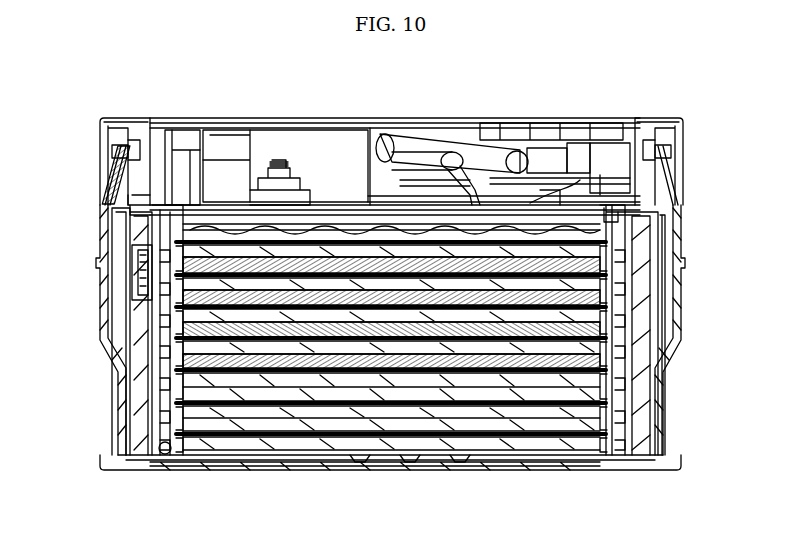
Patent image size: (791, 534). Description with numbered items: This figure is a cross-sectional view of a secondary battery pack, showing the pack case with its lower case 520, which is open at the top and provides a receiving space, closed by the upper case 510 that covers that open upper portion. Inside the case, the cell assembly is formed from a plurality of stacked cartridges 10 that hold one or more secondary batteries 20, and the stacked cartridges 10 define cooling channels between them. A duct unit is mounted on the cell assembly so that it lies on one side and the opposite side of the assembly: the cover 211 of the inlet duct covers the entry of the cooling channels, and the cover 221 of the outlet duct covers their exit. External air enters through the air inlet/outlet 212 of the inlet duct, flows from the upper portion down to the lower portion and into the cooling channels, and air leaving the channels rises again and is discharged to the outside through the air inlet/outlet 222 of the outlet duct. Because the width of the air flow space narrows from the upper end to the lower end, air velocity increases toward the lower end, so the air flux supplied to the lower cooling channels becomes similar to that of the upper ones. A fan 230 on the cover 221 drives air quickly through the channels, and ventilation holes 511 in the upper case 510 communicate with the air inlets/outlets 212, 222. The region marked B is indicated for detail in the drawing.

The cartridge 10 is at (165, 397).
The secondary battery 20 is at (283, 368).
The cover 211 is at (655, 298).
The air inlet/outlet 212 is at (678, 197).
The cover 221 is at (152, 373).
The air inlet/outlet 222 is at (108, 196).
The fan 230 is at (140, 266).
The upper case 510 is at (260, 125).
The ventilation hole 511 is at (108, 157).
The lower case 520 is at (108, 309).
The detail region B is at (162, 455).